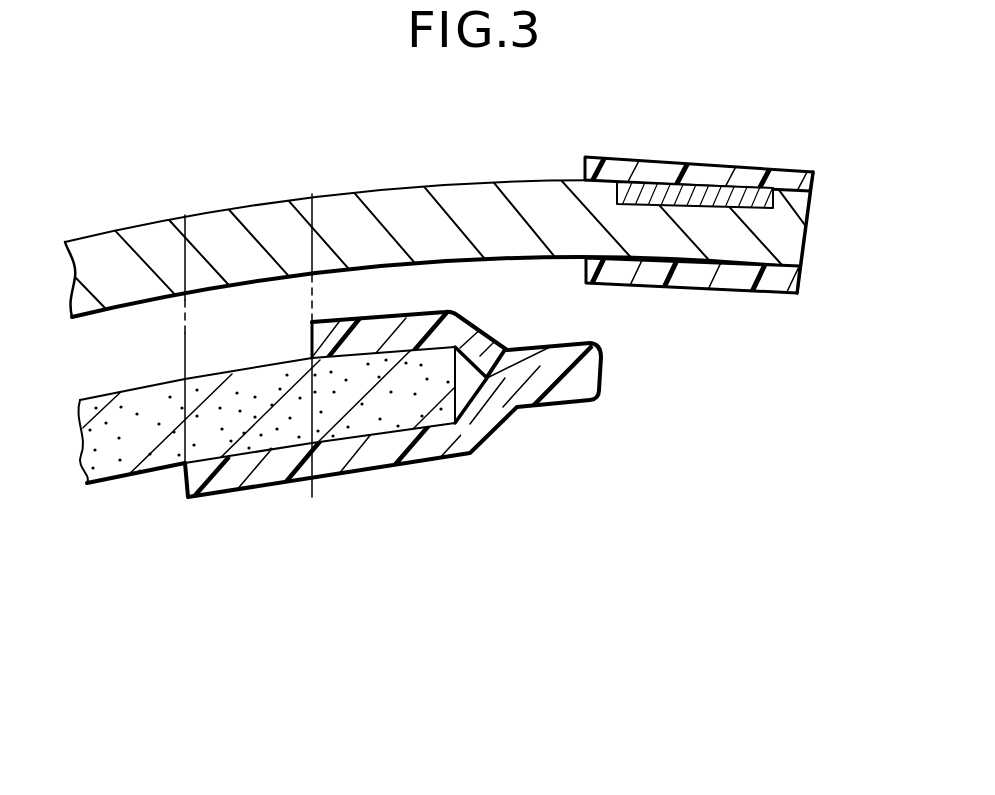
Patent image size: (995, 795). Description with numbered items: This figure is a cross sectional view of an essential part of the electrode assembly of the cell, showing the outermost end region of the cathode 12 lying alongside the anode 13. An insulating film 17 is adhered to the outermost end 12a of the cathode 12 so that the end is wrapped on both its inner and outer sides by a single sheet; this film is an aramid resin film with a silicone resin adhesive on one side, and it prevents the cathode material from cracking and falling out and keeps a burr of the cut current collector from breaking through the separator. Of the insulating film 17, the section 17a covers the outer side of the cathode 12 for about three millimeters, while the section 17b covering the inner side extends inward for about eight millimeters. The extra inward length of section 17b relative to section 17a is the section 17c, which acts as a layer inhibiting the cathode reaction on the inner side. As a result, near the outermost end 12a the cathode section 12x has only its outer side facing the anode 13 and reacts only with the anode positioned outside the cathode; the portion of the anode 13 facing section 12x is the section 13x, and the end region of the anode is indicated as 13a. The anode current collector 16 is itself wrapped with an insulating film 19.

The cathode 12 is at (120, 450).
The outermost end of the cathode 12a is at (513, 422).
The section of the cathode 12x is at (293, 405).
The anode 13 is at (123, 263).
The end portion of first band member 13a is at (788, 252).
The section of the anode 13x is at (260, 250).
The anode current collector 16 is at (742, 184).
The insulating film 17 is at (588, 378).
The section covering the outer side of the cathode 17a is at (407, 327).
The section covering the inner side of the cathode 17b is at (391, 447).
The inward extended section 17c is at (312, 488).
The insulating film 19 is at (660, 165).